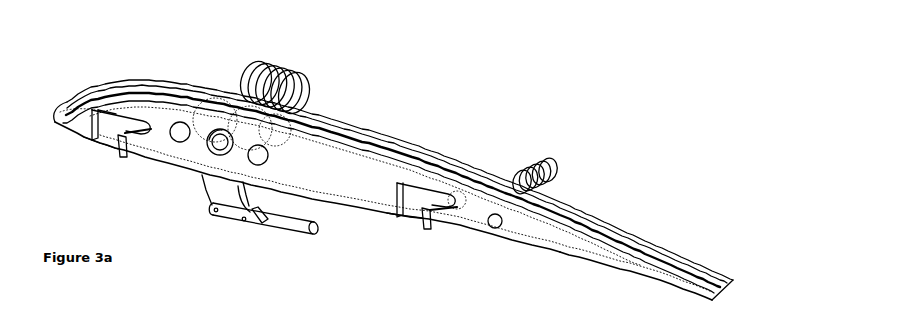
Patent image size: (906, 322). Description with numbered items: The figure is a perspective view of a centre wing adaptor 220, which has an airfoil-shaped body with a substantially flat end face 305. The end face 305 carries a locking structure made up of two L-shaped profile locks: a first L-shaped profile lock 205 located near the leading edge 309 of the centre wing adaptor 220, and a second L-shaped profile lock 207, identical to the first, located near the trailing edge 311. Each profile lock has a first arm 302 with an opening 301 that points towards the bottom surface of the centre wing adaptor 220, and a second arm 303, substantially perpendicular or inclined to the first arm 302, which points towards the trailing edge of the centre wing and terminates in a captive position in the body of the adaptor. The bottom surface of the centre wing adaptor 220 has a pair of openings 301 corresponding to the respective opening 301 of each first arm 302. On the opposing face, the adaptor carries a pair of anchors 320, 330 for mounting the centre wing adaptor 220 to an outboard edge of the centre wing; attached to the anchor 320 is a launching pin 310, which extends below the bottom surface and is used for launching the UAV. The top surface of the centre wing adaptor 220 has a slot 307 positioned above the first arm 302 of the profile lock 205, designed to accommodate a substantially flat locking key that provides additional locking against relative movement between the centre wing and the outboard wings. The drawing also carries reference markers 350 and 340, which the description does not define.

The longitudinal axis direction 350 is at (427, 166).
The slot 307 is at (123, 87).
The first L-shaped profile lock 205 is at (133, 115).
The leading edge 309 is at (85, 125).
The first arm 302 is at (97, 137).
The opening 301 is at (108, 140).
The second arm 303 is at (122, 149).
The launching pin 310 is at (277, 225).
The lateral direction 340 is at (312, 254).
The end face 305 is at (311, 171).
The anchor 320 is at (300, 85).
The second L-shaped profile lock 207 is at (422, 185).
The centre wing adaptor 220 is at (543, 105).
The anchor 330 is at (550, 160).
The trailing edge 311 is at (556, 253).